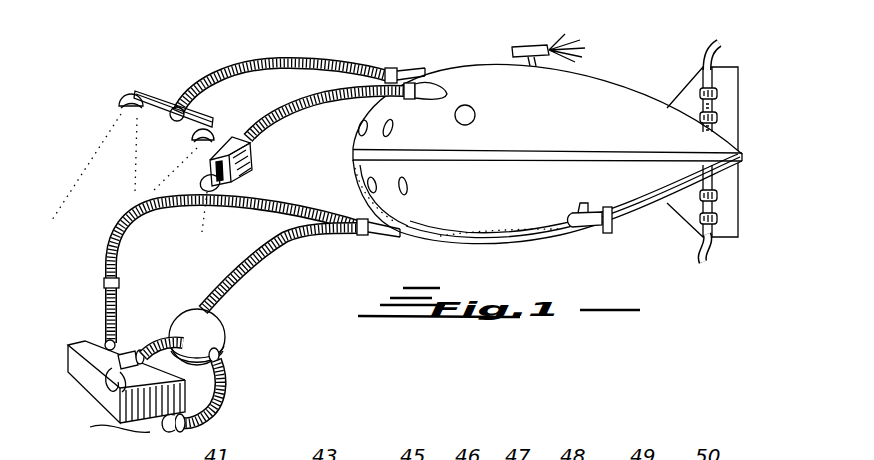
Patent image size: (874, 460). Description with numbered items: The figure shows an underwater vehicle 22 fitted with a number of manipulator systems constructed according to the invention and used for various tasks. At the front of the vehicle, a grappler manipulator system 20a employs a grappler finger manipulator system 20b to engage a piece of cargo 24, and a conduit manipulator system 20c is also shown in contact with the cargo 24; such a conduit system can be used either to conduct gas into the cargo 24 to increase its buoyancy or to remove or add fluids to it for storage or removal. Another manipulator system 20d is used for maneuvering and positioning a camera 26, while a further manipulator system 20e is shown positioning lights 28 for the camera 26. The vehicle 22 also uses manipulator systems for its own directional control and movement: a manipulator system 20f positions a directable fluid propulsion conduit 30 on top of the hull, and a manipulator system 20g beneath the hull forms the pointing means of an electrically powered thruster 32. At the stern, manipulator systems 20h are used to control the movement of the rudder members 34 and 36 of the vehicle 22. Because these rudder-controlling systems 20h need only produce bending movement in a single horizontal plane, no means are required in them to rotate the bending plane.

The grappler manipulator system 20a is at (268, 258).
The grappler finger manipulator system 20b is at (112, 390).
The conduit manipulator system 20c is at (122, 248).
The manipulator system 20d is at (292, 125).
The manipulator system 20e is at (278, 64).
The manipulator system 20f is at (521, 48).
The manipulator system 20g is at (600, 229).
The manipulator systems 20h is at (710, 62).
The underwater vehicle 22 is at (650, 207).
The cargo 24 is at (67, 382).
The camera 26 is at (212, 156).
The lights 28 is at (140, 95).
The directable fluid propulsion conduit 30 is at (563, 47).
The electrically powered thruster 32 is at (607, 233).
The rudder member 34 is at (730, 109).
The rudder member 36 is at (730, 192).